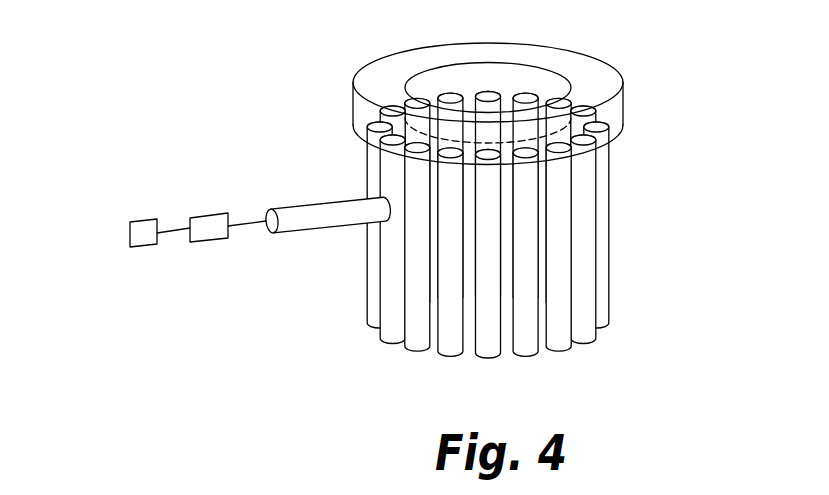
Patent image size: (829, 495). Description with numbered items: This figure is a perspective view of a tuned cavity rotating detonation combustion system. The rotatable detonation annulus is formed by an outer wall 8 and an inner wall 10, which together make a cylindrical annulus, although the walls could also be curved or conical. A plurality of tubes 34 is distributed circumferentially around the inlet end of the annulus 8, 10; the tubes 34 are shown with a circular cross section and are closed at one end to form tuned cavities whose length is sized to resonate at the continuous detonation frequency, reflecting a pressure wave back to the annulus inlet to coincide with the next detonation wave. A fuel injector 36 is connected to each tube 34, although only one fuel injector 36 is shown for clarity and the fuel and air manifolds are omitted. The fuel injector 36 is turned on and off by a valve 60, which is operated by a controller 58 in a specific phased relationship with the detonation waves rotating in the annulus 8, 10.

The outer wall 8 is at (526, 94).
The inner wall 10 is at (599, 68).
The tubes 34 is at (630, 122).
The fuel injector 36 is at (288, 213).
The controller 58 is at (128, 246).
The valves 60 is at (200, 242).